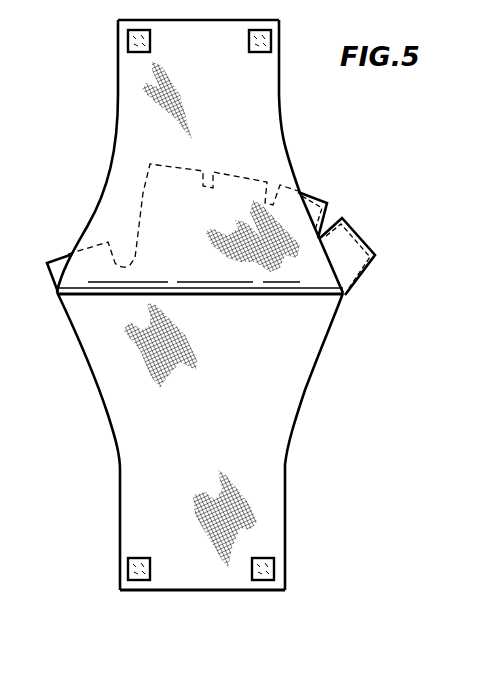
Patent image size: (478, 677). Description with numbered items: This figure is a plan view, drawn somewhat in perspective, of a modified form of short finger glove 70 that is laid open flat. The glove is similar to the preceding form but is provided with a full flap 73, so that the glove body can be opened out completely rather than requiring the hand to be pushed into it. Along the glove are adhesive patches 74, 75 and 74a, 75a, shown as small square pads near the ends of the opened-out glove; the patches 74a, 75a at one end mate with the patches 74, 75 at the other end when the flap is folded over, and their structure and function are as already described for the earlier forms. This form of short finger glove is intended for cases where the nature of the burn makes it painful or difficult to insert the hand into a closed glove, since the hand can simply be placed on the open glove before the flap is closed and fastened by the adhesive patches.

The short finger glove 70 is at (335, 215).
The full flap 73 is at (160, 128).
The adhesive patch 74 is at (274, 568).
The adhesive patch 74a is at (271, 33).
The adhesive patch 75 is at (127, 574).
The adhesive patch 75a is at (128, 41).